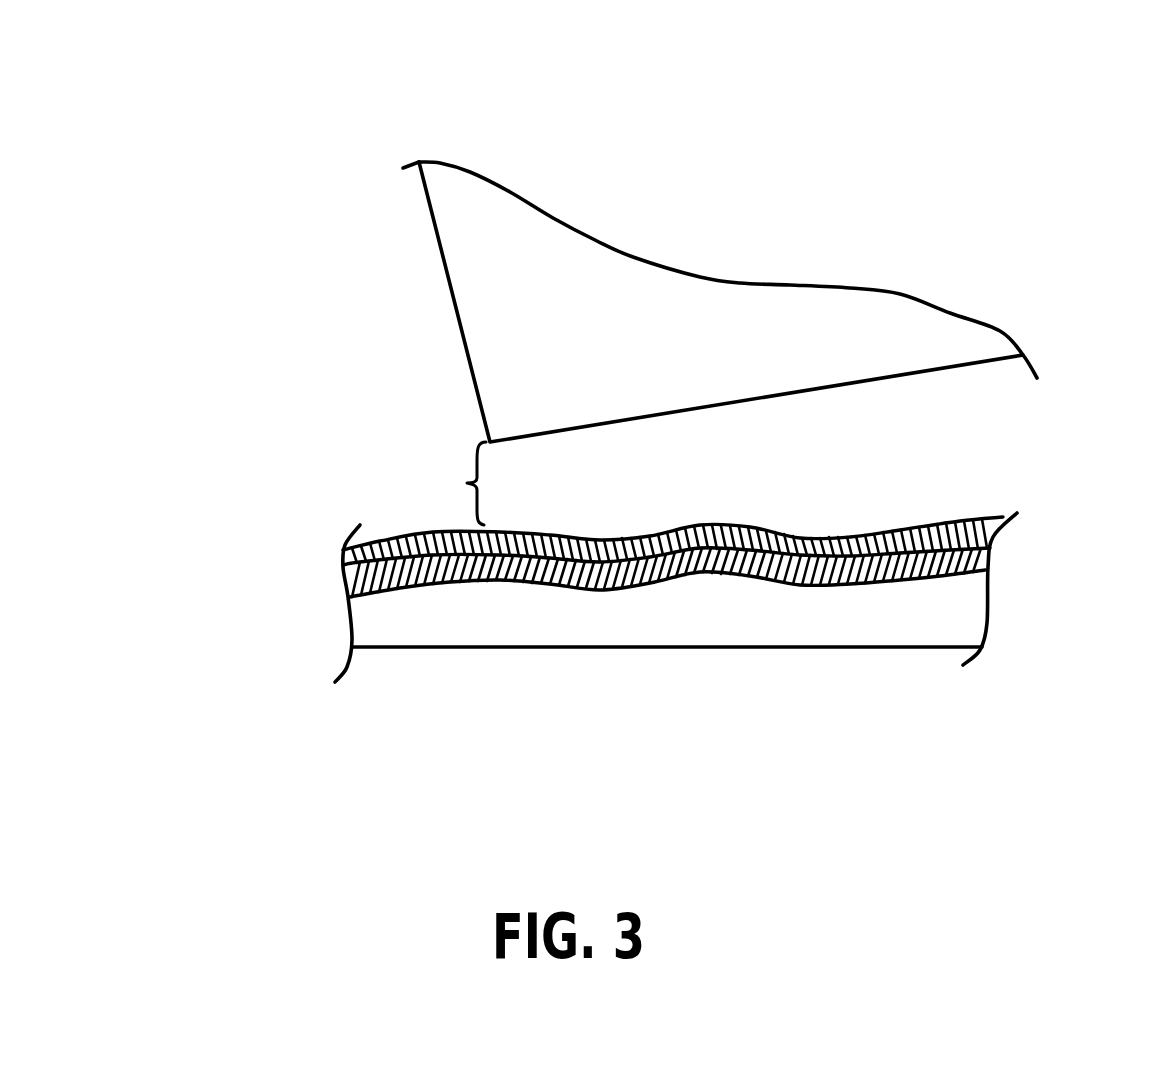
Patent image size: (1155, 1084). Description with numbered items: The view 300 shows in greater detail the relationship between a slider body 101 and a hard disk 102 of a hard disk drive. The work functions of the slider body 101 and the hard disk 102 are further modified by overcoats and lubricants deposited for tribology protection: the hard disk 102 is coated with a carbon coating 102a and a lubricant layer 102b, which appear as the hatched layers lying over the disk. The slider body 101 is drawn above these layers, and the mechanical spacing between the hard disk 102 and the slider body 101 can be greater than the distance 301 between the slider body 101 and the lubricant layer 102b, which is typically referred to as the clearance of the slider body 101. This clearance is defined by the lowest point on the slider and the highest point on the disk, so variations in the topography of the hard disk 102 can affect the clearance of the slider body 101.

The assembly 300 is at (400, 65).
The slider body 101 is at (713, 306).
The distance 301 is at (449, 483).
The hard disk 102 is at (667, 597).
The carbon coating 102a is at (995, 549).
The lubricant layer 102b is at (343, 550).